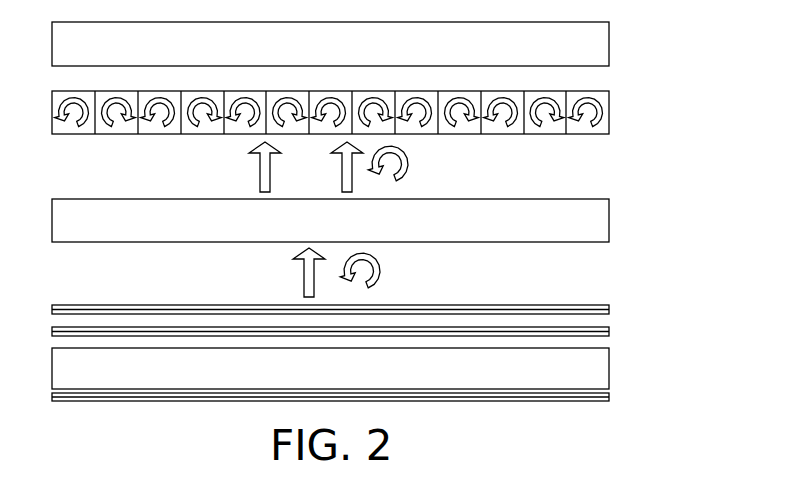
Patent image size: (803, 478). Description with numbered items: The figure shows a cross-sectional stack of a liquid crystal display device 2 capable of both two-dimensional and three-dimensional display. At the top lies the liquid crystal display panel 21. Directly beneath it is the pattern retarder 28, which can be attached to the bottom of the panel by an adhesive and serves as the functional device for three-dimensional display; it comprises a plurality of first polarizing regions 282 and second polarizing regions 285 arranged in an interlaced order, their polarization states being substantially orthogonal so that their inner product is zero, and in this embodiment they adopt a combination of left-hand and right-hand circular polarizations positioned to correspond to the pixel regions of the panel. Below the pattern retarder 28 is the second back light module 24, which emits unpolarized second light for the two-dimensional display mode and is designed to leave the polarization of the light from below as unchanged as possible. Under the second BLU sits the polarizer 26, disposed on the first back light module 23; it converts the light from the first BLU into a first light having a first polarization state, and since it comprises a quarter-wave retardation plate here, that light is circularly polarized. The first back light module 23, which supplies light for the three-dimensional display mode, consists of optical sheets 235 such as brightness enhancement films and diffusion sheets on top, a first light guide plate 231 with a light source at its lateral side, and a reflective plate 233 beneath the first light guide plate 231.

The liquid crystal display device 2 is at (731, 42).
The liquid crystal display panel 21 is at (609, 44).
The pattern retarder 28 is at (362, 136).
The second polarizing region 285 is at (545, 134).
The first polarizing region 282 is at (583, 134).
The second back light module 24 is at (609, 220).
The polarizer 26 is at (610, 312).
The first back light module 23 is at (393, 375).
The optical sheets 235 is at (610, 332).
The first light guide plate 231 is at (620, 359).
The reflective plate 233 is at (371, 415).